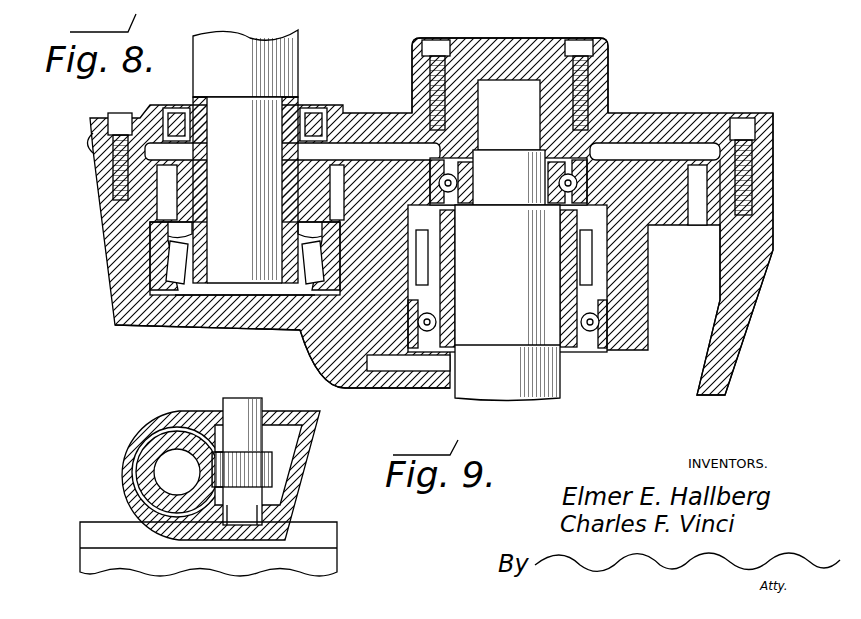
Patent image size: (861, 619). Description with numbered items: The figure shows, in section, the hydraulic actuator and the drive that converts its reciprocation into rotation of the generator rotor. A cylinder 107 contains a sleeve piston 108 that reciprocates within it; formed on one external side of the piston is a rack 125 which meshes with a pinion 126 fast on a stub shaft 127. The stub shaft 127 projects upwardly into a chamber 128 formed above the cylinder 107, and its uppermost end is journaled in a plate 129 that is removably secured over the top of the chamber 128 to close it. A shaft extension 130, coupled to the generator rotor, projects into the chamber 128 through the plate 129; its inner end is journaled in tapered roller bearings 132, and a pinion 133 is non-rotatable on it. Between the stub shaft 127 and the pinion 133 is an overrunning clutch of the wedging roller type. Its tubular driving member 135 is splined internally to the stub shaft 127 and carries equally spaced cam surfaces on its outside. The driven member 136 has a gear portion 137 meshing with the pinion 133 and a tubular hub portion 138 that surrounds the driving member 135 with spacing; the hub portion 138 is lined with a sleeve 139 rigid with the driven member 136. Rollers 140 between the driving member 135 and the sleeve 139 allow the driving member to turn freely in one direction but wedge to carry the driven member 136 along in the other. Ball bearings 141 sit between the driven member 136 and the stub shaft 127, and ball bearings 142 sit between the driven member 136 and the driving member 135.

In FIG. 8, the shaft extension 130 is at (275, 60).
In FIG. 8, the plate 129 is at (356, 118).
In FIG. 8, the pinion 133 is at (162, 214).
In FIG. 8, the tapered roller bearings 132 is at (178, 266).
In FIG. 8, the ball bearings 141 is at (470, 183).
In FIG. 8, the rollers 140 is at (432, 240).
In FIG. 8, the gear portion 137 is at (694, 215).
In FIG. 8, the driven member 136 is at (658, 230).
In FIG. 8, the hub portion 138 is at (370, 332).
In FIG. 8, the sleeve 139 is at (385, 372).
In FIG. 8, the ball bearings 142 is at (427, 332).
In FIG. 8, the driving member 135 is at (453, 388).
In FIG. 8, the stub shaft 127 is at (522, 397).
In FIG. 9, the stub shaft 127 is at (232, 405).
In FIG. 8, the chamber 128 is at (690, 380).
In FIG. 9, the cylinder 107 is at (135, 433).
In FIG. 9, the sleeve piston 108 is at (152, 463).
In FIG. 9, the rack 125 is at (216, 452).
In FIG. 9, the pinion 126 is at (272, 476).